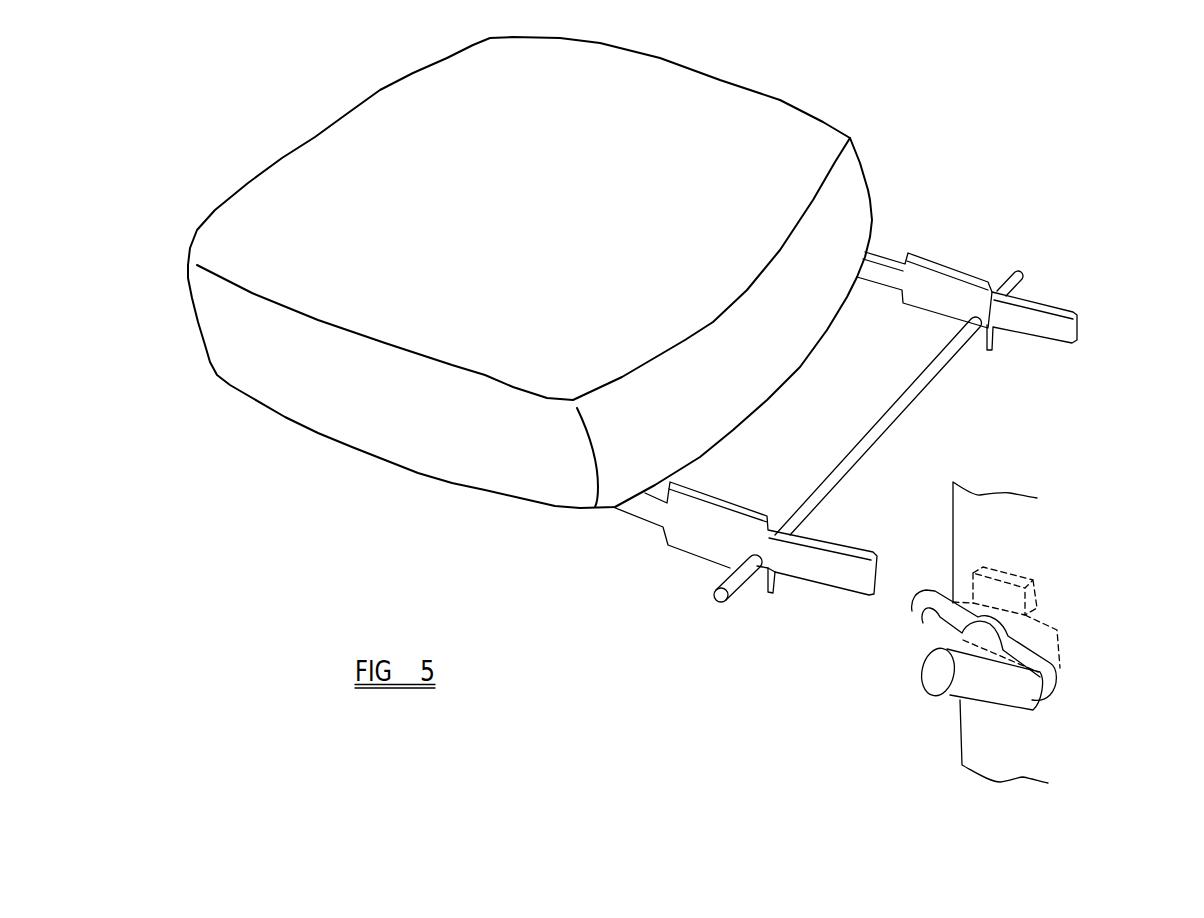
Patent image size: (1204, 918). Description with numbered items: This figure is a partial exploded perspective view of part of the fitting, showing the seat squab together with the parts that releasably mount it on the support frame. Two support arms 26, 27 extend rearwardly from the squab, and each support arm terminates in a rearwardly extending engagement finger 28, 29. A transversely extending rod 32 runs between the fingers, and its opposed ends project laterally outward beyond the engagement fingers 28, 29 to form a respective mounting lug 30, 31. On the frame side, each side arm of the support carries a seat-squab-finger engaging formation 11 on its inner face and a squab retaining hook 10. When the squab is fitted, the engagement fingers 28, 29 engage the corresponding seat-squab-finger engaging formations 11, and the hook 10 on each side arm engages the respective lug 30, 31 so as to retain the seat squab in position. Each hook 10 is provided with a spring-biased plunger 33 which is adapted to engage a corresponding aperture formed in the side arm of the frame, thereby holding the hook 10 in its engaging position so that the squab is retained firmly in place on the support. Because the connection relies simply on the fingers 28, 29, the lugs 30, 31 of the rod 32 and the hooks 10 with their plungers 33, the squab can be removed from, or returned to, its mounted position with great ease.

The squab retaining hook 10 is at (1032, 688).
The seat-squab-finger engaging formation 11 is at (1028, 580).
The support arm 26 is at (698, 527).
The support arm 27 is at (937, 293).
The engagement finger 28 is at (835, 560).
The engagement finger 29 is at (1033, 314).
The mounting lug 30 is at (738, 573).
The mounting lug 31 is at (1003, 289).
The transversely extending rod 32 is at (922, 393).
The spring-biased plunger 33 is at (963, 672).